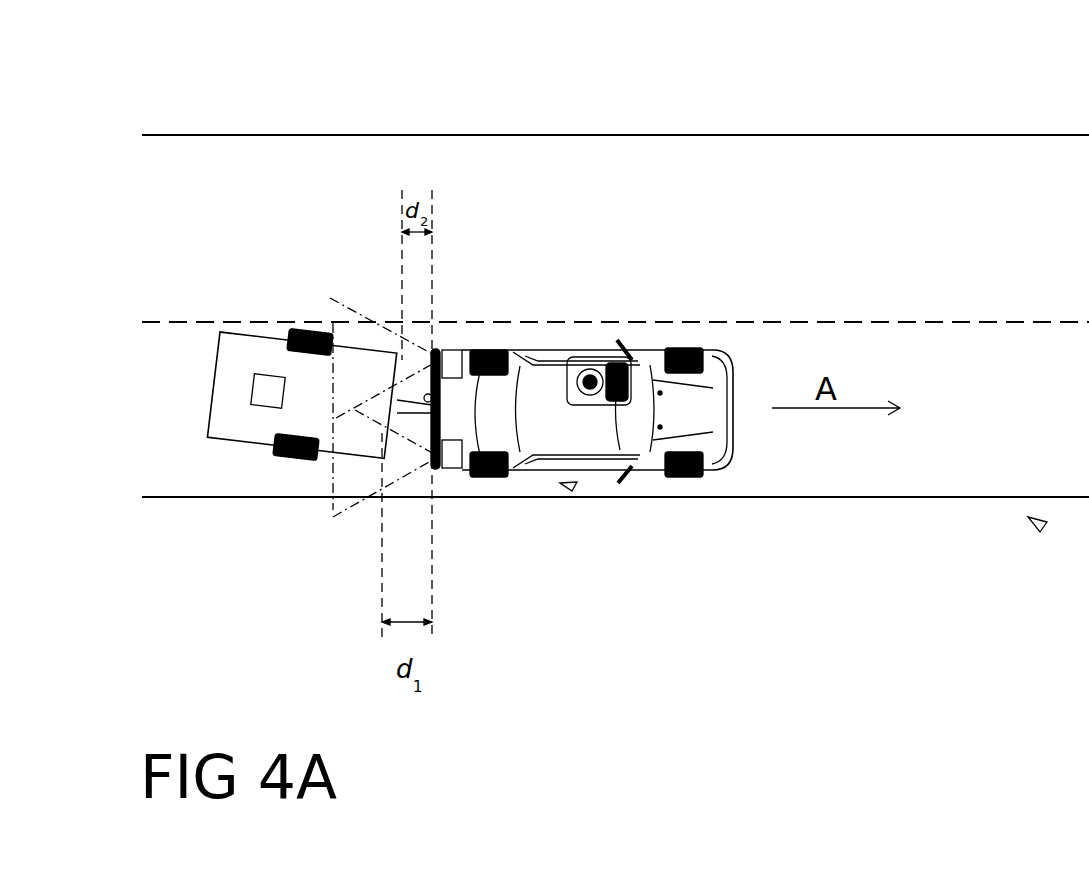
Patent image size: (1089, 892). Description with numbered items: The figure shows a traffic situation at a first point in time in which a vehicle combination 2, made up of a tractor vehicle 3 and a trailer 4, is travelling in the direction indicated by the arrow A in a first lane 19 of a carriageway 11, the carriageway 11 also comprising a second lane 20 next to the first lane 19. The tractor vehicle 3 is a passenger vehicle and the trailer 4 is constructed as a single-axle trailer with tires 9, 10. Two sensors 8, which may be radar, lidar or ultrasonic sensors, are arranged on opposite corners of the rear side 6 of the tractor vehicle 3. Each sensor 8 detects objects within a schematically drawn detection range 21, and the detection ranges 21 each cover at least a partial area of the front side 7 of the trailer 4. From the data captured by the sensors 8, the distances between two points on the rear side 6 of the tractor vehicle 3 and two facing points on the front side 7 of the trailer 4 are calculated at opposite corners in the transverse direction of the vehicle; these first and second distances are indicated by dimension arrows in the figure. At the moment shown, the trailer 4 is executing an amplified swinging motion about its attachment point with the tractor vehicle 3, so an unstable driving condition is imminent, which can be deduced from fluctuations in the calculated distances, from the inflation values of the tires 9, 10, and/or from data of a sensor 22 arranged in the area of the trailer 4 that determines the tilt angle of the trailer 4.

The vehicle combination 2 is at (577, 486).
The tractor vehicle 3 is at (707, 450).
The trailer 4 is at (225, 440).
The rear side 6 is at (425, 392).
The front side 7 is at (387, 450).
The sensors 8 is at (451, 375).
The tire 9 is at (290, 462).
The tire 10 is at (303, 326).
The carriageway 11 is at (1043, 530).
The first lane 19 is at (940, 470).
The second lane 20 is at (975, 172).
The detection range 21 is at (364, 330).
The sensor 22 is at (270, 390).